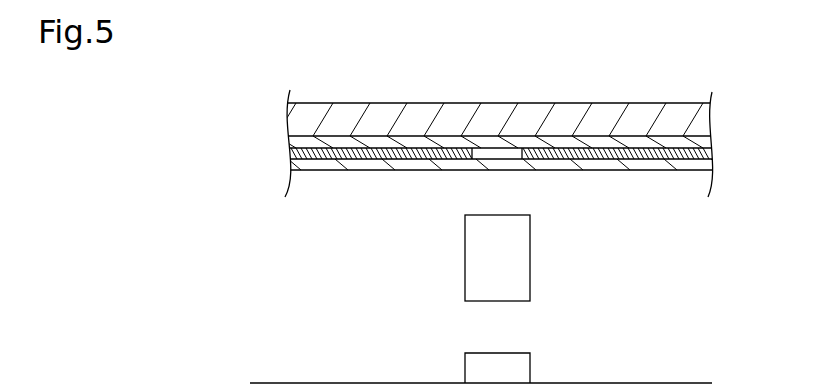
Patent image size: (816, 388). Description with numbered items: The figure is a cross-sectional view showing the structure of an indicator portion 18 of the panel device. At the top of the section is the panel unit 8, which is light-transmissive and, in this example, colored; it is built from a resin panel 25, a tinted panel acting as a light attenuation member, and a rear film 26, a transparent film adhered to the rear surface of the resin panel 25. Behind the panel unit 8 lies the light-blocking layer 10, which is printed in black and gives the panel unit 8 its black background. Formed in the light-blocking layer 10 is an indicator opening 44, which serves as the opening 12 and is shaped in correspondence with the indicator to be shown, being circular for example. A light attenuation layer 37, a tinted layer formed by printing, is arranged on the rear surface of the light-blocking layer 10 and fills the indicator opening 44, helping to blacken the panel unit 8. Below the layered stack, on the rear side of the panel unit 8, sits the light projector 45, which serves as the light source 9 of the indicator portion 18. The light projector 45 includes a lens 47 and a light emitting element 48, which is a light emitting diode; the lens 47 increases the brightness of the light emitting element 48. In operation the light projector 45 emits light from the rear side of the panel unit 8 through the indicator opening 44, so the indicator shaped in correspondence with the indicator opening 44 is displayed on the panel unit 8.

The indicator portion 18 is at (468, 120).
The panel unit 8 is at (508, 125).
The resin panel 25 is at (508, 119).
The rear film 26 is at (508, 142).
The light-blocking layer 10 is at (502, 159).
The light attenuation layer 37 is at (381, 153).
The opening 12 is at (615, 153).
The indicator opening 44 is at (615, 153).
The light source 9 is at (481, 299).
The light projector 45 is at (481, 299).
The lens 47 is at (465, 283).
The light emitting element 48 is at (465, 370).